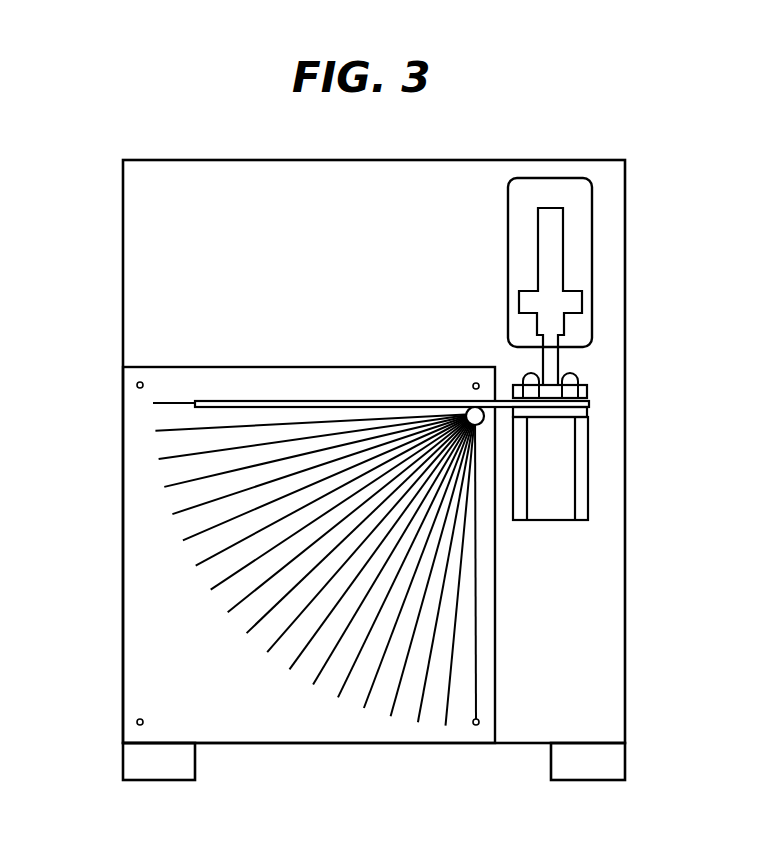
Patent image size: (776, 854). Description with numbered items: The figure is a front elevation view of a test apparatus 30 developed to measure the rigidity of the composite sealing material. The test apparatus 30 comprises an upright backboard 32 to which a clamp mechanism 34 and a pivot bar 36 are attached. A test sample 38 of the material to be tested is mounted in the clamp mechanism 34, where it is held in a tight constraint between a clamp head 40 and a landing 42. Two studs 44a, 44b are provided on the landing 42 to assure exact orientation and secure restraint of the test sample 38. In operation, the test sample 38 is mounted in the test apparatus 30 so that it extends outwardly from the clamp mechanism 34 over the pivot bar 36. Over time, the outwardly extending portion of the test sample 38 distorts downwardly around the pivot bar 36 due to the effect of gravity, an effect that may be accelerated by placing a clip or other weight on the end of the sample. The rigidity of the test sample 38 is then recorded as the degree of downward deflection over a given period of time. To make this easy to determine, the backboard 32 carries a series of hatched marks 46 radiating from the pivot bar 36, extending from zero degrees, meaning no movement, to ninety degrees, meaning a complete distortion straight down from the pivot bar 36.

The test apparatus 30 is at (662, 170).
The upright backboard 32 is at (272, 174).
The clamp mechanism 34 is at (580, 270).
The pivot bar 36 is at (482, 421).
The test sample 38 is at (332, 400).
The clamp head 40 is at (586, 387).
The landing 42 is at (588, 409).
The stud 44a is at (527, 379).
The stud 44b is at (577, 379).
The hatched marks 46 is at (172, 514).